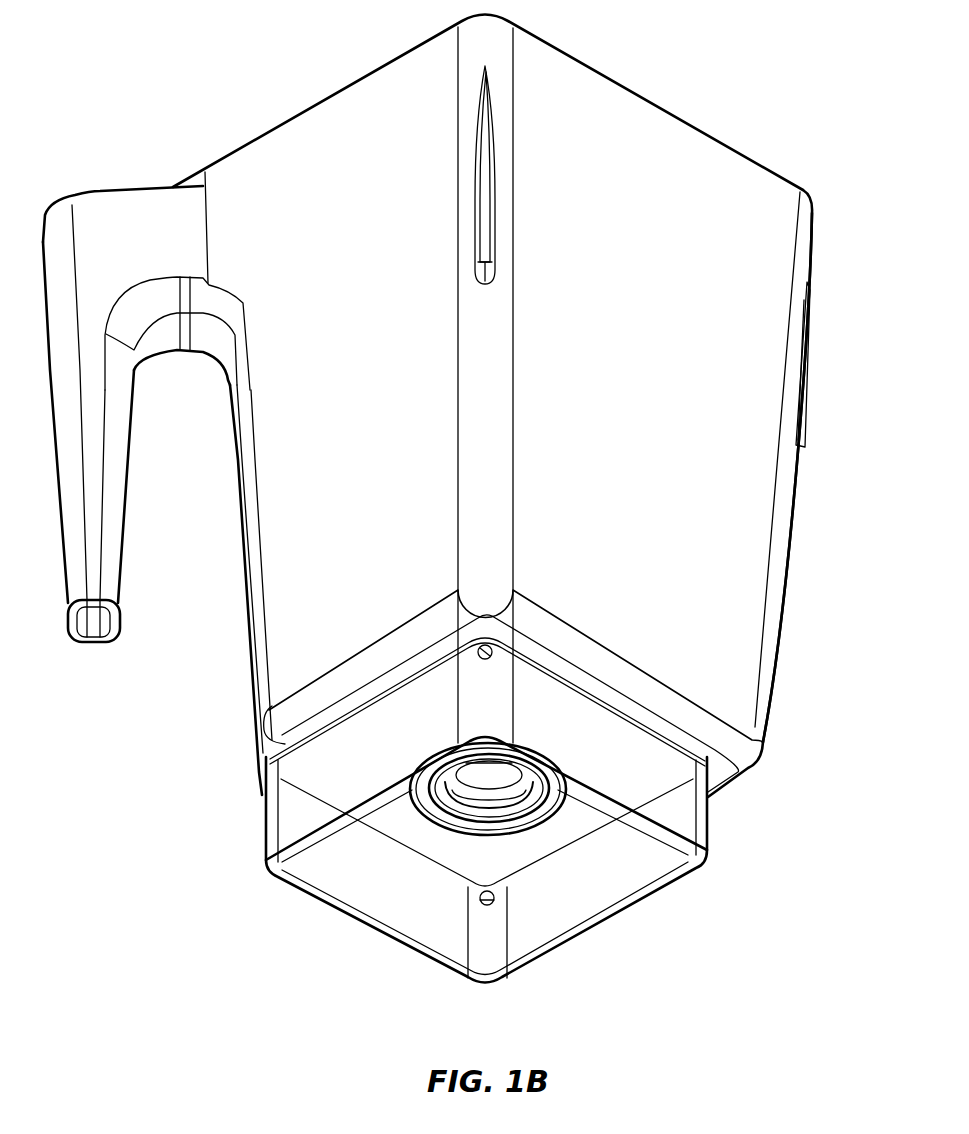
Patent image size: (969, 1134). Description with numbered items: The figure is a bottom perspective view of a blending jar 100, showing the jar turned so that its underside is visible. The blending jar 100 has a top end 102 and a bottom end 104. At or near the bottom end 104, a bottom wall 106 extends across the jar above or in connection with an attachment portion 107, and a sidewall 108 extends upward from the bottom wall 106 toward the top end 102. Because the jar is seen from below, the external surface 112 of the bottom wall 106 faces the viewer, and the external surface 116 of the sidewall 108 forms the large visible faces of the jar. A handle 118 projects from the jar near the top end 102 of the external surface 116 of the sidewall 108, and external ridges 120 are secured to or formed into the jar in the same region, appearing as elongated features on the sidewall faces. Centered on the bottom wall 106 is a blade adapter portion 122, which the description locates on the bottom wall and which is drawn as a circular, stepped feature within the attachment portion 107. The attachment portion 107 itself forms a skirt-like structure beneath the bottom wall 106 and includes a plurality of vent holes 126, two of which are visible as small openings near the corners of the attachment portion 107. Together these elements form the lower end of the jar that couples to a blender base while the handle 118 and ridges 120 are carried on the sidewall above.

The blending jar 100 is at (453, 513).
The top end 102 is at (818, 208).
The bottom end 104 is at (253, 834).
The bottom wall 106 is at (420, 829).
The attachment portion 107 is at (682, 808).
The sidewall 108 is at (697, 517).
The external surface 112 is at (447, 862).
The external surface 116 is at (715, 608).
The handle 118 is at (117, 458).
The external ridges 120 is at (485, 178).
The blade adapter portion 122 is at (551, 823).
The vent holes 126 is at (495, 640).